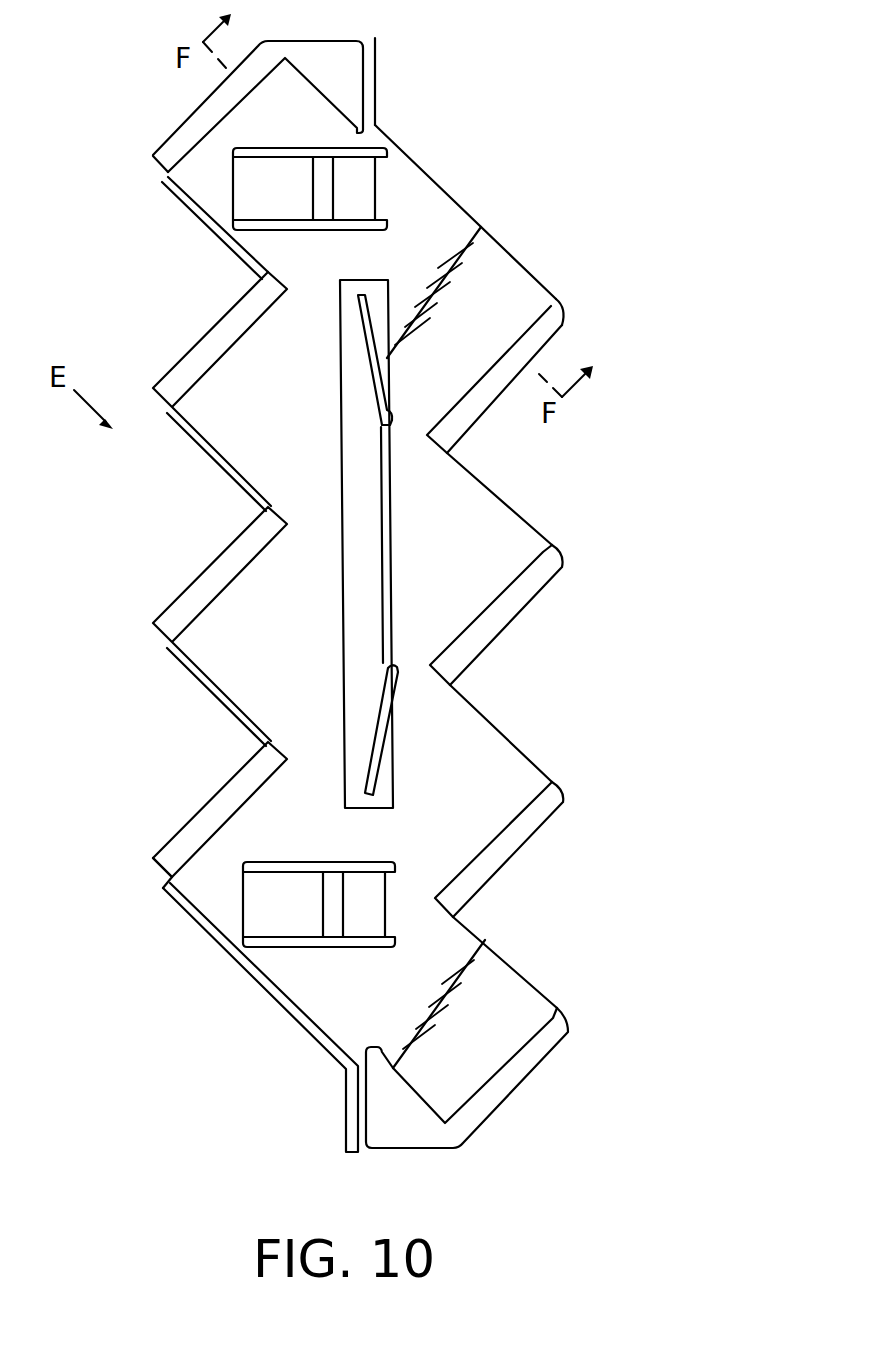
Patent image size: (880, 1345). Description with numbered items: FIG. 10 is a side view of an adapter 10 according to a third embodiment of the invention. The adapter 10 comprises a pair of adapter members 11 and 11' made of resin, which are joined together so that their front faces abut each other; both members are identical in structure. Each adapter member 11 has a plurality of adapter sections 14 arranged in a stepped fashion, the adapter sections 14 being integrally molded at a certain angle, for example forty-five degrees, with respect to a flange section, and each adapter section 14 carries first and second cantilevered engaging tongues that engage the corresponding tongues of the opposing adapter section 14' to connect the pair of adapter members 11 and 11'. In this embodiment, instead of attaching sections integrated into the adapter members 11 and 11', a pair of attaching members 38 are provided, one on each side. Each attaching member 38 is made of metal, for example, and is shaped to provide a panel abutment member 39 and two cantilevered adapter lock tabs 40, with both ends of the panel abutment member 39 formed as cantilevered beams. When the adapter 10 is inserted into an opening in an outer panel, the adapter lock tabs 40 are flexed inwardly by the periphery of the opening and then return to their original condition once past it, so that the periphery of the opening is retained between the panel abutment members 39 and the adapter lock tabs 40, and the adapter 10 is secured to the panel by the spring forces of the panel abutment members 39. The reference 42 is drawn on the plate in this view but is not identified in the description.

The adapter 10 is at (360, 595).
The adapter member 11 is at (608, 324).
The adapter member 11' is at (112, 861).
The adapter section 14 is at (513, 726).
The adapter section 14' is at (182, 505).
The attaching member 38 is at (486, 217).
The panel abutment member 39 is at (393, 500).
The adapter lock tab 40 is at (293, 185).
The tab 42 is at (375, 740).